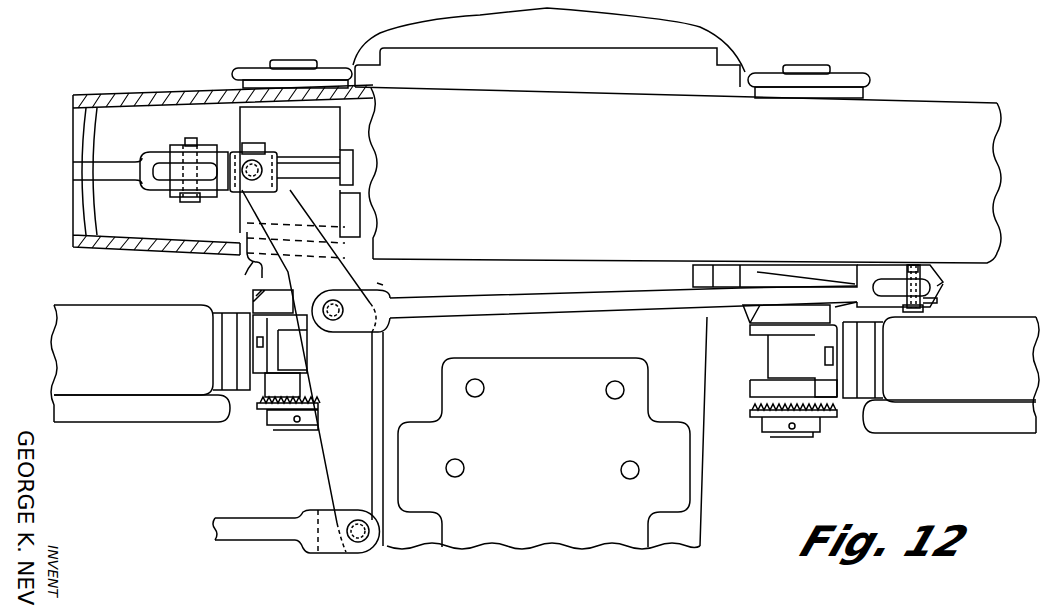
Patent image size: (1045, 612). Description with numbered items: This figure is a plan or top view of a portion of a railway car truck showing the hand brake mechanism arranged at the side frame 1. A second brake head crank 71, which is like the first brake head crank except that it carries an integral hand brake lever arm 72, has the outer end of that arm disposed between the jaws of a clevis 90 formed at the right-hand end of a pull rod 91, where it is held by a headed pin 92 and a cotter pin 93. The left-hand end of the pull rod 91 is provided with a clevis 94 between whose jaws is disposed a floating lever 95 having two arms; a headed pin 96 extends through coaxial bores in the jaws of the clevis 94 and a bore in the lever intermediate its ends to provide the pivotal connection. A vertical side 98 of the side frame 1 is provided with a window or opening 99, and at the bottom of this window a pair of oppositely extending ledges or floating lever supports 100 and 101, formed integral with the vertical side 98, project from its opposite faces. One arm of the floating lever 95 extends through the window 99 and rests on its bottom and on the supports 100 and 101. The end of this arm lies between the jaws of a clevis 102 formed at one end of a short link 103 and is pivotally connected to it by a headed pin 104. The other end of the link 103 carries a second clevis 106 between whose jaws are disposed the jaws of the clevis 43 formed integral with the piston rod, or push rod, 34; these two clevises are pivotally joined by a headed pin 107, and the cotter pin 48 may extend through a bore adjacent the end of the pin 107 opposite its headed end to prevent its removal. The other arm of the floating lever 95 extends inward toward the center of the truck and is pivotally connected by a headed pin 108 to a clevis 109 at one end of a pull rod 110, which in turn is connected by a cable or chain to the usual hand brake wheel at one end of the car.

The side frame 1 is at (913, 97).
The piston rod 34 is at (113, 167).
The clevis 43 is at (150, 181).
The cotter pin 48 is at (192, 142).
The second brake head crank 71 is at (752, 312).
The hand brake lever arm 72 is at (938, 300).
The clevis 90 is at (938, 282).
The pull rod 91 is at (638, 297).
The headed pin 92 is at (913, 311).
The cotter pin 93 is at (910, 266).
The clevis 94 is at (359, 320).
The floating lever 95 is at (340, 460).
The headed pin 96 is at (329, 299).
The vertical side 98 is at (128, 244).
The window 99 is at (242, 254).
The floating lever support 100 is at (247, 228).
The floating lever support 101 is at (253, 264).
The clevis 102 is at (282, 160).
The short link 103 is at (224, 154).
The headed pin 104 is at (261, 167).
The second clevis 106 is at (170, 148).
The headed pin 107 is at (188, 202).
The headed pin 108 is at (362, 545).
The clevis 109 is at (344, 547).
The pull rod 110 is at (277, 528).